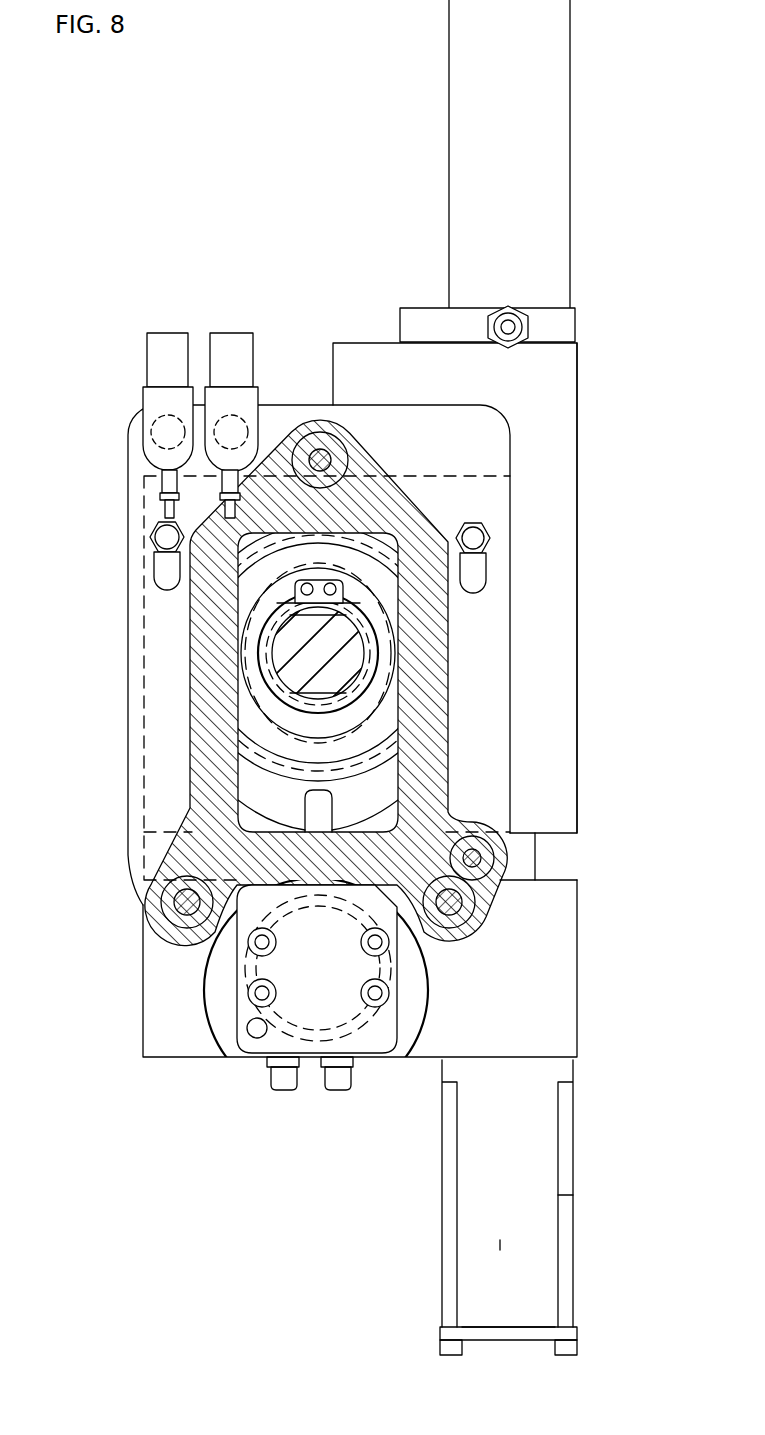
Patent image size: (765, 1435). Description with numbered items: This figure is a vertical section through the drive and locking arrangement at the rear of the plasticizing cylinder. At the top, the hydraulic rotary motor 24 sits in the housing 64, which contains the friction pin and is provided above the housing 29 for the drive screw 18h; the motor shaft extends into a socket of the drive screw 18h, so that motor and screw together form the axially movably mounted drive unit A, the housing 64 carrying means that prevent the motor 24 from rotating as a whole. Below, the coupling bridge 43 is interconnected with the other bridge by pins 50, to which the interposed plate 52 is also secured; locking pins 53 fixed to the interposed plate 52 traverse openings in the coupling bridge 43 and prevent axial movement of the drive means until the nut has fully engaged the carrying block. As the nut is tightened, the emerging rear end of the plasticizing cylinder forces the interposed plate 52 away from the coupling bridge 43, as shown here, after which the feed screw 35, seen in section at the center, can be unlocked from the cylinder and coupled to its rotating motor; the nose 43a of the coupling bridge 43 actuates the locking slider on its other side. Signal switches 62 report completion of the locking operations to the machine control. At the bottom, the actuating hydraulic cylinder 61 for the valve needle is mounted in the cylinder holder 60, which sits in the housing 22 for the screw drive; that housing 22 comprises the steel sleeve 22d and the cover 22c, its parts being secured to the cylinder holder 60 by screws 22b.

The hydraulic rotary motor 24 is at (520, 140).
The housing 64 is at (555, 396).
The housing for the drive screw 29 is at (555, 548).
The coupling bridge 43 is at (476, 465).
The nose of the coupling bridge 43a is at (320, 804).
The pins 50 is at (346, 462).
The interposed plate 52 is at (448, 716).
The feed screw 35 is at (340, 652).
The locking pins 53 is at (525, 857).
The drive screw 18h is at (536, 870).
The cylinder holder 60 is at (524, 1010).
The actuating hydraulic cylinder 61 is at (420, 1028).
The signal switches 62 is at (220, 344).
The housing for the screw drive 22 is at (576, 1133).
The screws 22b is at (563, 1200).
The cover 22c is at (520, 1337).
The steel sleeve 22d is at (515, 1245).
The drive unit A is at (583, 477).